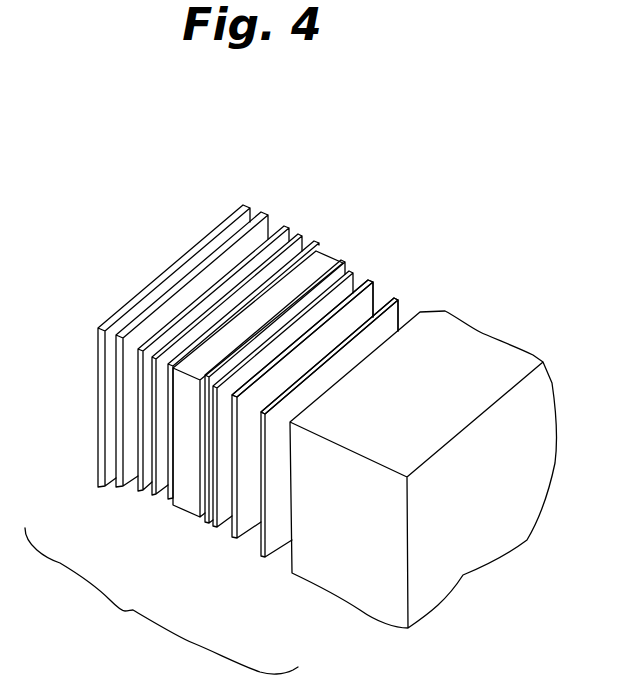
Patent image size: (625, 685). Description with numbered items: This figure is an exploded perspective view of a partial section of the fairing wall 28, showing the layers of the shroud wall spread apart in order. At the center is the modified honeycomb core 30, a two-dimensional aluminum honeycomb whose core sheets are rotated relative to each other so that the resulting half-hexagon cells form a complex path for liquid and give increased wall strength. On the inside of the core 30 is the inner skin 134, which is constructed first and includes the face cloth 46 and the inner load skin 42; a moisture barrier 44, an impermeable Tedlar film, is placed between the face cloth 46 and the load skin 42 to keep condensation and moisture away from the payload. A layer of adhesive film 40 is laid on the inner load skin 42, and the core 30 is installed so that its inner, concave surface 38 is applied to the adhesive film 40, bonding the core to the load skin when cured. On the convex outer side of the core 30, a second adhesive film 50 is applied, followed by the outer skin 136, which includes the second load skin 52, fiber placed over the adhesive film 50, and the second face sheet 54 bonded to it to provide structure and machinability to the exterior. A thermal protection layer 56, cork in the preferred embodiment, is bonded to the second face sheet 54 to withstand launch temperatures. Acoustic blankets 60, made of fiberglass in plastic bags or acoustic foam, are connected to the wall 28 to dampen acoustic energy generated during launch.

The fairing wall 28 is at (125, 611).
The modified honeycomb core 30 is at (323, 260).
The inner surface of the core 38 is at (343, 268).
The adhesive film 40 is at (207, 522).
The inner load skin 42 is at (218, 525).
The moisture barrier 44 is at (372, 284).
The face cloth 46 is at (265, 557).
The second adhesive film 50 is at (173, 497).
The second load skin 52 is at (307, 233).
The second face sheet 54 is at (143, 492).
The thermal protection layer 56 is at (272, 207).
The acoustic blankets 60 is at (497, 498).
The inner skin 134 is at (380, 312).
The outer skin 136 is at (178, 345).